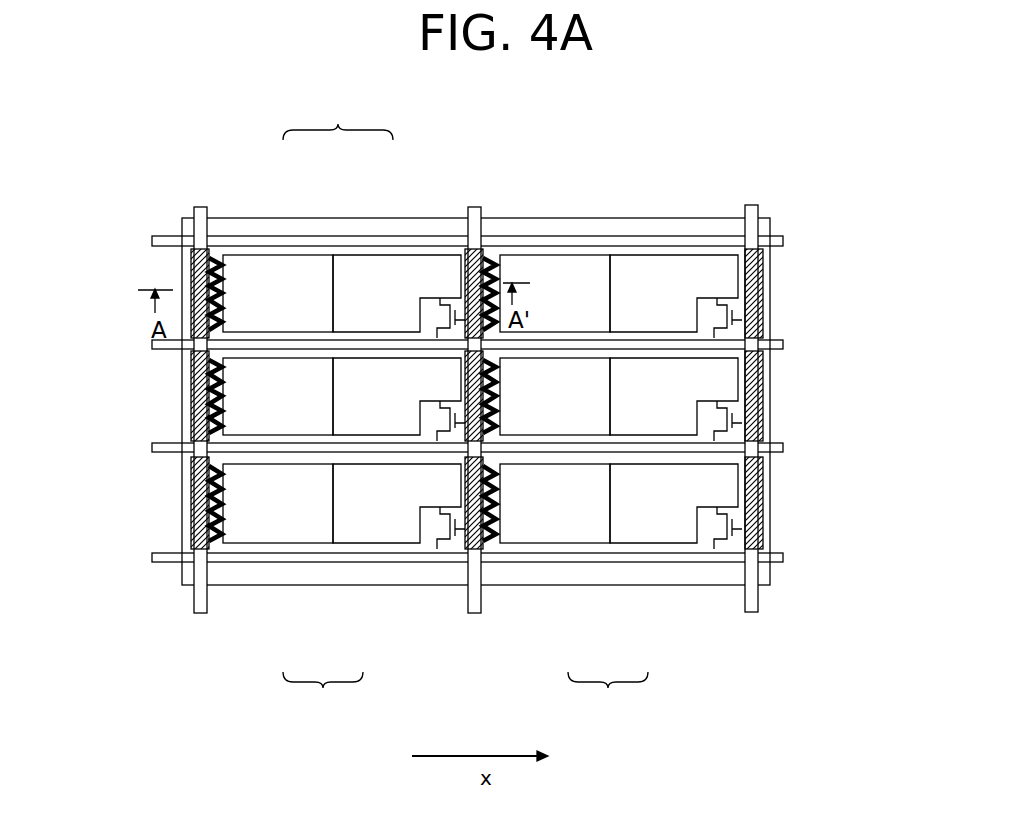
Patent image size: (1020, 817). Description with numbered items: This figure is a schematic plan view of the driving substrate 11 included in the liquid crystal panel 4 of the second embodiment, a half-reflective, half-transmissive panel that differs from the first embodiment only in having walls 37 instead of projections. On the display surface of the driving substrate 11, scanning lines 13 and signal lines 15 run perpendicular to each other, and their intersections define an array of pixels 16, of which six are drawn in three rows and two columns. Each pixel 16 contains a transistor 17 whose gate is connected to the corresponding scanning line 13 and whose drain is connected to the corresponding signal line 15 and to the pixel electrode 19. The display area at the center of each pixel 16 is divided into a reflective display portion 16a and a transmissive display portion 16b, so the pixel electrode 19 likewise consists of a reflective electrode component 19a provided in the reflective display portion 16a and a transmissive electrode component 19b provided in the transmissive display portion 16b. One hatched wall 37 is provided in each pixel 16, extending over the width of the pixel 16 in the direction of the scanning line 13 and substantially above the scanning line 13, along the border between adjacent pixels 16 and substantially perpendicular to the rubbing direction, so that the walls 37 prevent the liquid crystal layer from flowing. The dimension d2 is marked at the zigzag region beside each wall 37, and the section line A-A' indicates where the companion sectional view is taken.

The liquid crystal panel 4 is at (699, 153).
The driving substrate 11 is at (771, 586).
The scanning line 13 is at (197, 209).
The signal line 15 is at (783, 341).
The pixel 16 is at (338, 119).
The reflective display portion 16a is at (277, 268).
The transmissive display portion 16b is at (377, 266).
The transistor 17 is at (433, 537).
The pixel electrode 19 is at (465, 692).
The reflective electrode component 19a is at (270, 546).
The transmissive electrode component 19b is at (363, 546).
The wall 37 is at (760, 284).
The gap distance d2 is at (200, 271).